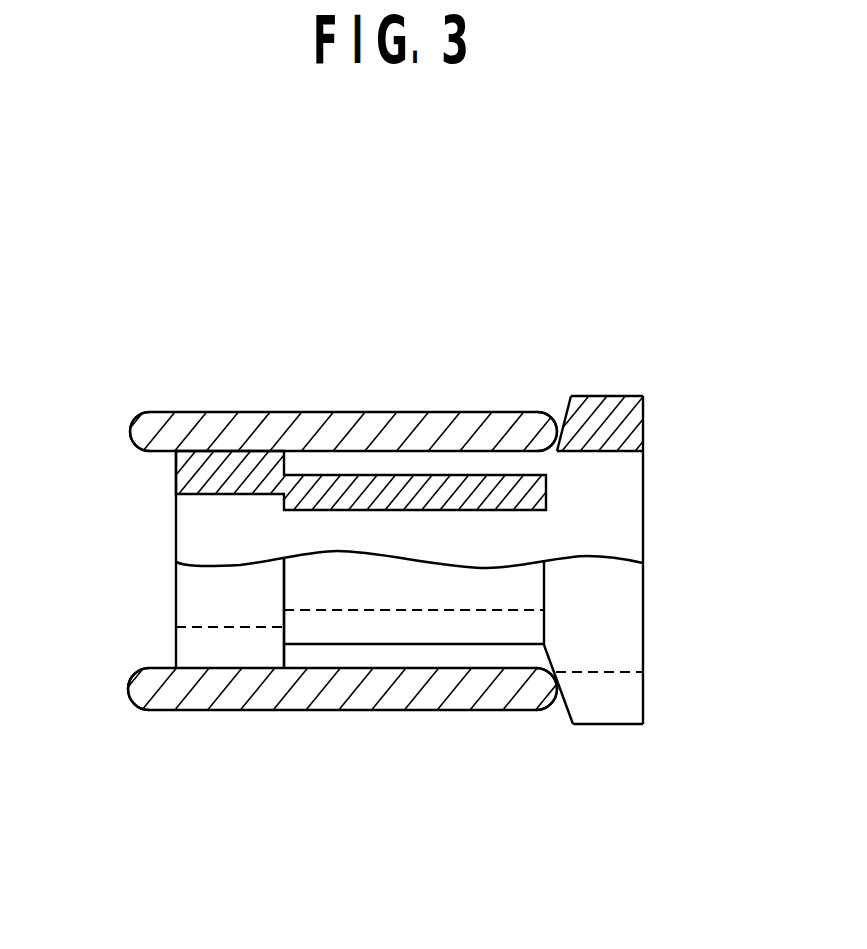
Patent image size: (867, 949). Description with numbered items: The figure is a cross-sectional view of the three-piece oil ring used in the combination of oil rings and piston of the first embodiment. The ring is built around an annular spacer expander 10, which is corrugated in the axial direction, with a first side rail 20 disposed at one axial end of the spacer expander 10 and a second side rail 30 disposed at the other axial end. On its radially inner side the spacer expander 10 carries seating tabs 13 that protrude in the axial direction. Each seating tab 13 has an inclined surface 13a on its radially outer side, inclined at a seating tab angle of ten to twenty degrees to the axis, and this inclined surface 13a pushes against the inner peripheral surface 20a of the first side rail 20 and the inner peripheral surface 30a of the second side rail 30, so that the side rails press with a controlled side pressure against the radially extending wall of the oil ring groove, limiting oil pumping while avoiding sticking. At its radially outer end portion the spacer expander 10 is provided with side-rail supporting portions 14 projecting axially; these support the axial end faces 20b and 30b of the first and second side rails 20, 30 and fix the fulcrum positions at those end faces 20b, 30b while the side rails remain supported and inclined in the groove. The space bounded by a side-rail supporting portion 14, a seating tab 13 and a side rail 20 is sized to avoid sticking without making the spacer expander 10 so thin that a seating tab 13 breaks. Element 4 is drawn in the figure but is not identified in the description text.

The connector housing 4 is at (233, 650).
The spacer expander 10 is at (617, 513).
The seating tab 13 is at (623, 420).
The inclined surface 13a is at (559, 432).
The side-rail supporting portion 14 is at (230, 470).
The first side rail 20 is at (362, 410).
The inner peripheral surface of the first side rail 20a is at (558, 432).
The axial end face of the first side rail 20b is at (133, 443).
The second side rail 30 is at (427, 697).
The inner peripheral surface of the second side rail 30a is at (550, 693).
The axial end face of the second side rail 30b is at (130, 678).